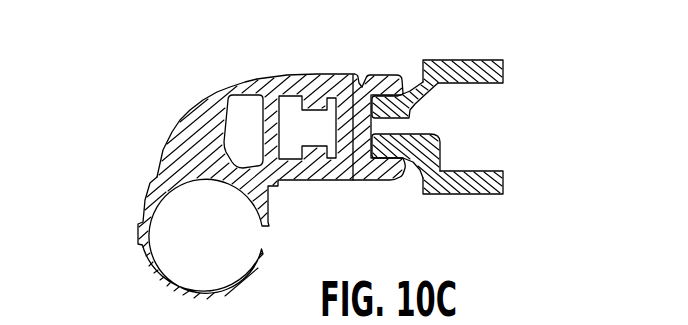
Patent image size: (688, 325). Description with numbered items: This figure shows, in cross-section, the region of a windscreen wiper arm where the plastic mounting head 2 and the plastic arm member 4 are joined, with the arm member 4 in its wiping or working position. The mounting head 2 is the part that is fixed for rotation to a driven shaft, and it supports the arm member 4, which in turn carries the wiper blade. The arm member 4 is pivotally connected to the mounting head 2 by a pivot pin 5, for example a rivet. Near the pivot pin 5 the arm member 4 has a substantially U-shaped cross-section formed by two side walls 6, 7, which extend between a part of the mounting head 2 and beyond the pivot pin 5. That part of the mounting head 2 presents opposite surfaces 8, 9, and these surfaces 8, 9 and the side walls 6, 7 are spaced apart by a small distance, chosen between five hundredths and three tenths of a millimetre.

The mounting head 2 is at (182, 117).
The arm member 4 is at (498, 67).
The pivot pin 5 is at (351, 88).
The side wall 6 is at (383, 143).
The side wall 7 is at (405, 107).
The opposite surface 8 is at (352, 180).
The opposite surface 9 is at (361, 84).